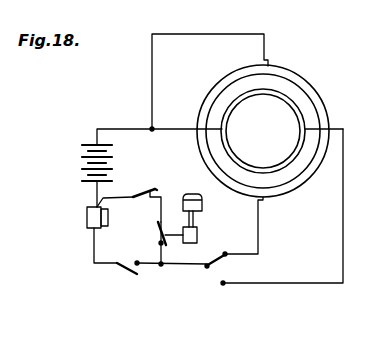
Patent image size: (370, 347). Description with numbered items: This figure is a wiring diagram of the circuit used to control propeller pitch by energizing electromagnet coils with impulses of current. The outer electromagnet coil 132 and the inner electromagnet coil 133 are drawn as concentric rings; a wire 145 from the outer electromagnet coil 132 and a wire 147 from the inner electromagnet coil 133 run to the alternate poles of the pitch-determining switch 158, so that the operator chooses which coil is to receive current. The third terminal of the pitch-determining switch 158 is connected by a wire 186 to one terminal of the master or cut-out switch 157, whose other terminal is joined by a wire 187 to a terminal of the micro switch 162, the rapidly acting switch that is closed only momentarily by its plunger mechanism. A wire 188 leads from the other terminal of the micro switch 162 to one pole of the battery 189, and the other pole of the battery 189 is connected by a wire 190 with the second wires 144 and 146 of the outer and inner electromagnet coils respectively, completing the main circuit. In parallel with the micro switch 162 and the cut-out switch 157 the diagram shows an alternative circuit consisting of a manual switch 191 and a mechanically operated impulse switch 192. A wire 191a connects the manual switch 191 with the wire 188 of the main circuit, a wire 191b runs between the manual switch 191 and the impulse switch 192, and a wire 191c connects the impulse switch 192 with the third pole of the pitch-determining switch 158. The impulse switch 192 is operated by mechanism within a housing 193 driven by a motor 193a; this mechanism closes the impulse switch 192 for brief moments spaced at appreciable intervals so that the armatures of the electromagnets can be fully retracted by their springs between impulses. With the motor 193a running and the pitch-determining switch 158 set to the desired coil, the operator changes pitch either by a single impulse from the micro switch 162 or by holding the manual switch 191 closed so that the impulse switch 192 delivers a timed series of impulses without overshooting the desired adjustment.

The second wire of the outer electromagnet coil 144 is at (223, 34).
The outer electromagnet coil 132 is at (304, 62).
The inner electromagnet coil 133 is at (256, 168).
The second wire of the inner electromagnet coil 146 is at (175, 128).
The wire 190 is at (118, 128).
The battery 189 is at (84, 160).
The wire 188 is at (96, 192).
The micro switch 162 is at (86, 216).
The wire 187 is at (93, 263).
The master or cut-out switch 157 is at (128, 272).
The wire 186 is at (148, 266).
The pitch-determining switch 158 is at (208, 269).
The wire 191a is at (125, 195).
The manual switch 191 is at (156, 191).
The wire 191b is at (160, 208).
The impulse switch 192 is at (160, 233).
The wire 191c is at (162, 257).
The motor 193a is at (202, 208).
The housing 193 is at (197, 237).
The wire 145 is at (262, 222).
The wire 147 is at (294, 282).